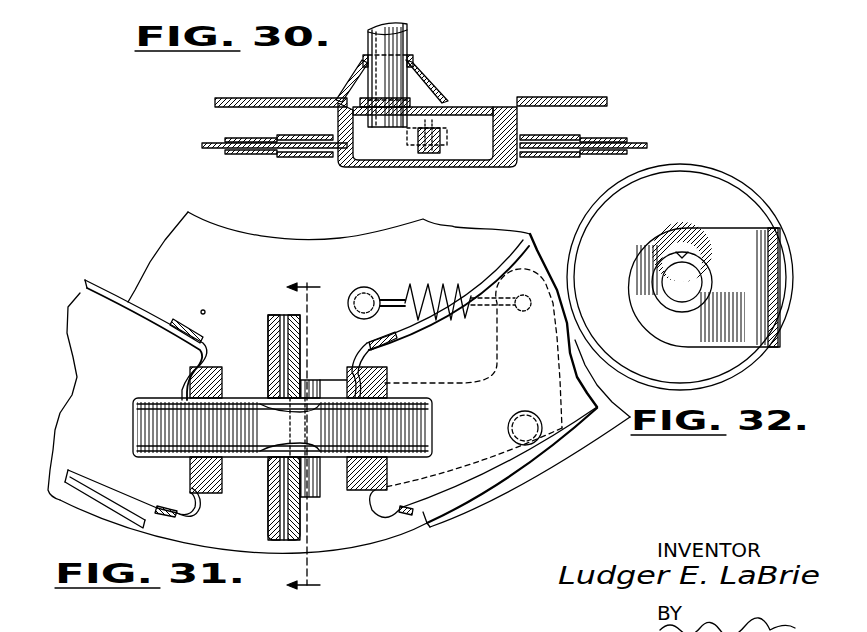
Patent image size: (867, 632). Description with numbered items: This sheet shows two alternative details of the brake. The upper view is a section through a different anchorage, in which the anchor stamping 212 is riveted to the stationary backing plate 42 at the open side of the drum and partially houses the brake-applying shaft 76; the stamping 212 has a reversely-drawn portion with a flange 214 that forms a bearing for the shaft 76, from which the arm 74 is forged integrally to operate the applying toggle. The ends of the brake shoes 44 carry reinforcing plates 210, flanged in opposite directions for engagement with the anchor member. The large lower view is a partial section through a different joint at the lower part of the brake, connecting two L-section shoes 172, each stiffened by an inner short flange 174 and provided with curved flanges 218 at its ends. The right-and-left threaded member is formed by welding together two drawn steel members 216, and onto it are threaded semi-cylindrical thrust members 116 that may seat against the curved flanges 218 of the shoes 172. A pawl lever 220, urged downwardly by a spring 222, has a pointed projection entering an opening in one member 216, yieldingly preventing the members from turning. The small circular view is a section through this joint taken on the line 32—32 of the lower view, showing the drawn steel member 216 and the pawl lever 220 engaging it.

In FIG. 31, the section line 32— 32 is at (303, 442).
In FIG. 30, the backing plate 42 is at (262, 98).
In FIG. 31, the backing plate 42 is at (354, 256).
In FIG. 30, the brake shoes 44 is at (212, 126).
In FIG. 30, the arm 74 is at (400, 120).
In FIG. 30, the brake-applying shaft 76 is at (390, 40).
In FIG. 31, the thrust members 116 is at (212, 482).
In FIG. 31, the shoes 172 is at (339, 382).
In FIG. 31, the inner short flange 174 is at (85, 279).
In FIG. 30, the reinforcing plates 210 is at (248, 155).
In FIG. 30, the anchor stamping 212 is at (445, 142).
In FIG. 30, the flange 214 is at (358, 107).
In FIG. 31, the drawn steel members 216 is at (278, 360).
In FIG. 32, the drawn steel members 216 is at (682, 256).
In FIG. 31, the curved flanges 218 is at (185, 495).
In FIG. 31, the pawl lever 220 is at (330, 480).
In FIG. 32, the pawl lever 220 is at (705, 287).
In FIG. 31, the spring 222 is at (423, 284).